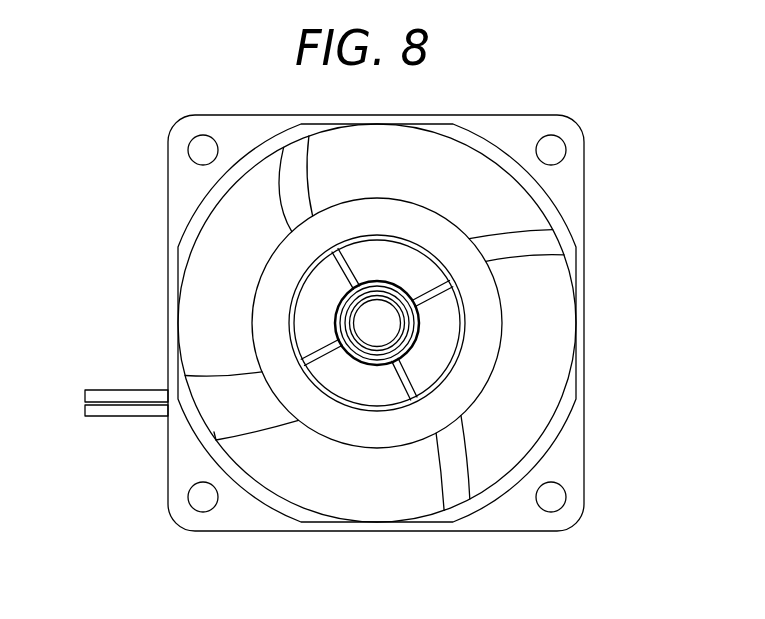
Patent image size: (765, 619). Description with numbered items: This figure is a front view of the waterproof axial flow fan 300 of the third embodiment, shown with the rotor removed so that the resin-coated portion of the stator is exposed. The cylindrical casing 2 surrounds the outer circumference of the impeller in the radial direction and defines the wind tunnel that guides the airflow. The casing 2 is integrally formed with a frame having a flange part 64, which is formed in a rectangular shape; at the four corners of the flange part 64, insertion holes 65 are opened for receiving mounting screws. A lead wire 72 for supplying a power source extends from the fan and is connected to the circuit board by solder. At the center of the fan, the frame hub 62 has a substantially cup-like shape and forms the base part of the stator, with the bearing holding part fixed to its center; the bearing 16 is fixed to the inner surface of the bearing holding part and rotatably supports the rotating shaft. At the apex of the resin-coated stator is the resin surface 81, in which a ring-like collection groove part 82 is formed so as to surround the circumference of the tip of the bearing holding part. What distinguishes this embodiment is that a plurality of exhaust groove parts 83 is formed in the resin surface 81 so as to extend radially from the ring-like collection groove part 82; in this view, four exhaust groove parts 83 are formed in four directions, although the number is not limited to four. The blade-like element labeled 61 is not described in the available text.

The waterproof axial flow fan 300 is at (493, 82).
The casing 2 is at (188, 221).
The flange part 64 is at (180, 168).
The insertion holes 65 is at (565, 143).
The lead wire 72 is at (128, 390).
The blade 61 is at (547, 243).
The frame hub 62 is at (473, 372).
The resin surface 81 is at (316, 305).
The ring-like collection groove part 82 is at (418, 327).
The bearing 16 is at (309, 362).
The exhaust groove parts 83 is at (407, 383).